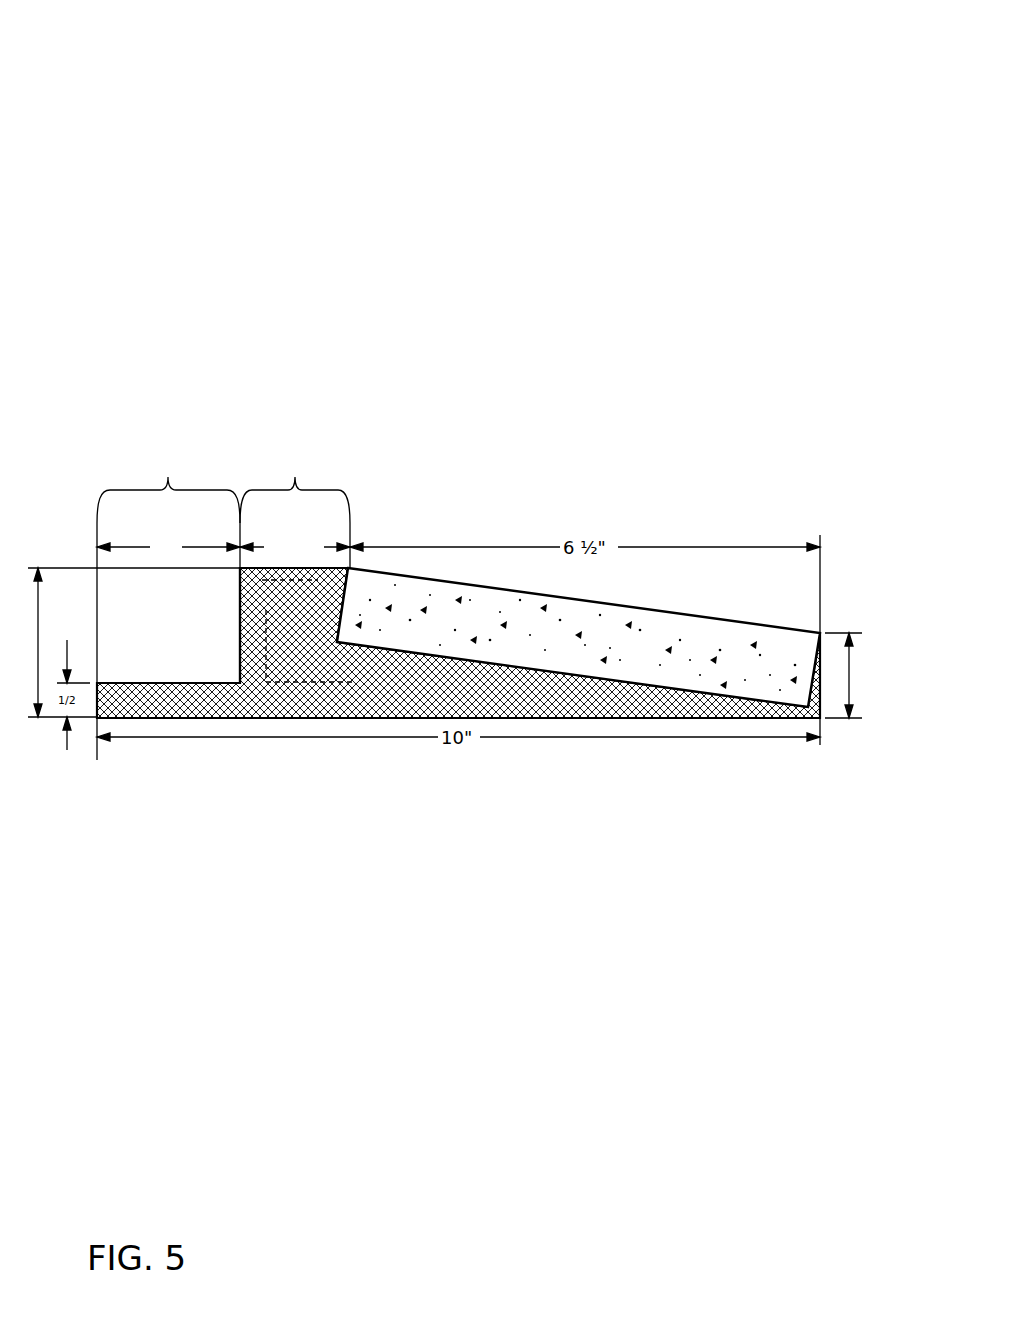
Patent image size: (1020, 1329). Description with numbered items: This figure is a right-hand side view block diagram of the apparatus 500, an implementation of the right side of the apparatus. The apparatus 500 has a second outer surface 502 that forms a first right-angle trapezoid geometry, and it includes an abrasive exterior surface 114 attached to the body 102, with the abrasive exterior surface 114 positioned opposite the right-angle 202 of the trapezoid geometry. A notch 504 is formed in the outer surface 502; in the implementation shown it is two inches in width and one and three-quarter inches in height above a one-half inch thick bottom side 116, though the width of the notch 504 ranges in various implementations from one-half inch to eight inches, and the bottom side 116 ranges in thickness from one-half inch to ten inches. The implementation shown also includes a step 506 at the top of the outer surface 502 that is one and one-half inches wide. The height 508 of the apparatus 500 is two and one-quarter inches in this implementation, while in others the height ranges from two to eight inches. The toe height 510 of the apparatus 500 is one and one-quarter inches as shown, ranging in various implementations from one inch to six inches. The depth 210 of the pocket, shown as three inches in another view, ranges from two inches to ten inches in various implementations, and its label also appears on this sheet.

The apparatus 500 is at (907, 35).
The body 102 is at (420, 700).
The abrasive exterior surface 114 is at (658, 638).
The bottom side 116 is at (673, 718).
The right-angle 202 is at (317, 675).
The depth 210 is at (129, 1002).
The second outer surface 502 is at (310, 700).
The notch 504 is at (168, 500).
The step 506 is at (295, 500).
The height 508 is at (38, 568).
The toe height 510 is at (848, 633).